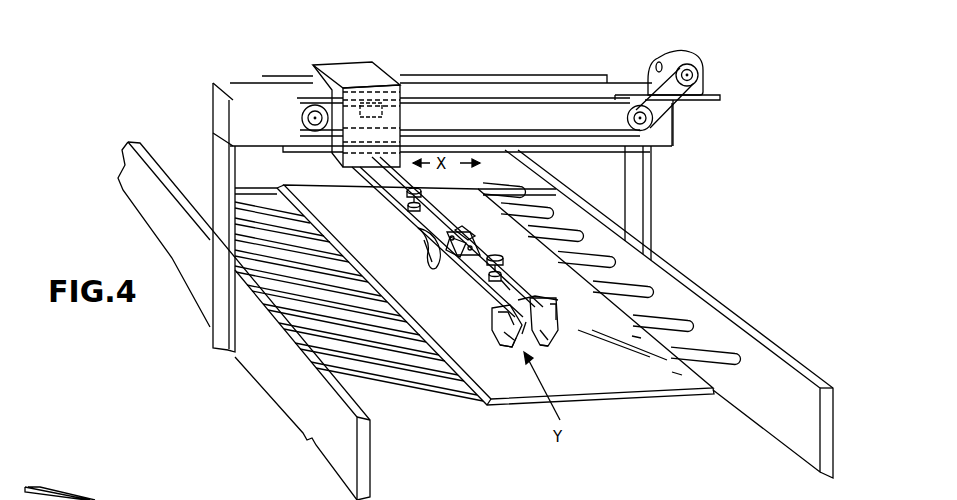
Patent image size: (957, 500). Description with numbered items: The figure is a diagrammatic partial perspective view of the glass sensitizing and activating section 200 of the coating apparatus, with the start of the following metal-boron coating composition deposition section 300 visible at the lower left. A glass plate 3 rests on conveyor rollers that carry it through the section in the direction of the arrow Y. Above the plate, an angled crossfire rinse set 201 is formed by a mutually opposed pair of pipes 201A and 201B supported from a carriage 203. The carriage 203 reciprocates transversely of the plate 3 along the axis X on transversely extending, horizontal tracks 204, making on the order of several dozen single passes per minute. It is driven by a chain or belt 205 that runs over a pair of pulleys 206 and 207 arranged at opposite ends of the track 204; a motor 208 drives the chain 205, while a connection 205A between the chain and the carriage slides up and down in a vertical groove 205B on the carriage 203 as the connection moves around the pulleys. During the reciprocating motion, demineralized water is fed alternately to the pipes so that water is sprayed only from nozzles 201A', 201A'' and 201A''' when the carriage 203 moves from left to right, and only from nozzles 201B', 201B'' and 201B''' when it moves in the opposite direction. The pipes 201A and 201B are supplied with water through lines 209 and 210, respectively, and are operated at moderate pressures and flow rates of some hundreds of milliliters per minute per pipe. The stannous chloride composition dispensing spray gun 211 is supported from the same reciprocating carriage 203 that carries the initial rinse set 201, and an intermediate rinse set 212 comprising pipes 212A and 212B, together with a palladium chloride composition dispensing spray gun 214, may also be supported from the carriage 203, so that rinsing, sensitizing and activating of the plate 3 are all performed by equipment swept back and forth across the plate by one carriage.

The glass sensitizing and activating section 200 is at (162, 77).
The glass plate 3 is at (667, 386).
The angled crossfire rinse set 201 is at (523, 334).
The pipe 201A is at (473, 321).
The nozzle 201A' is at (489, 358).
The nozzle 201A'' is at (477, 345).
The nozzle 201A''' is at (470, 324).
The pipe 201B is at (555, 316).
The nozzle 201B' is at (575, 369).
The nozzle 201B'' is at (578, 350).
The nozzle 201B''' is at (580, 317).
The carriage 203 is at (375, 72).
The tracks 204 is at (555, 96).
The chain or belt 205 is at (593, 128).
The connection 205A is at (363, 102).
The vertical groove 205B is at (382, 117).
The pulley 206 is at (302, 118).
The pulley 207 is at (672, 147).
The motor 208 is at (703, 63).
The line 209 is at (382, 195).
The line 210 is at (456, 228).
The stannous chloride composition dispensing spray gun 211 is at (508, 268).
The intermediate rinse set 212 is at (414, 258).
The pipe 212A is at (418, 233).
The pipe 212B is at (468, 238).
The palladium chloride composition dispensing spray gun 214 is at (430, 198).
The metal-boron coating composition deposition section 300 is at (125, 490).